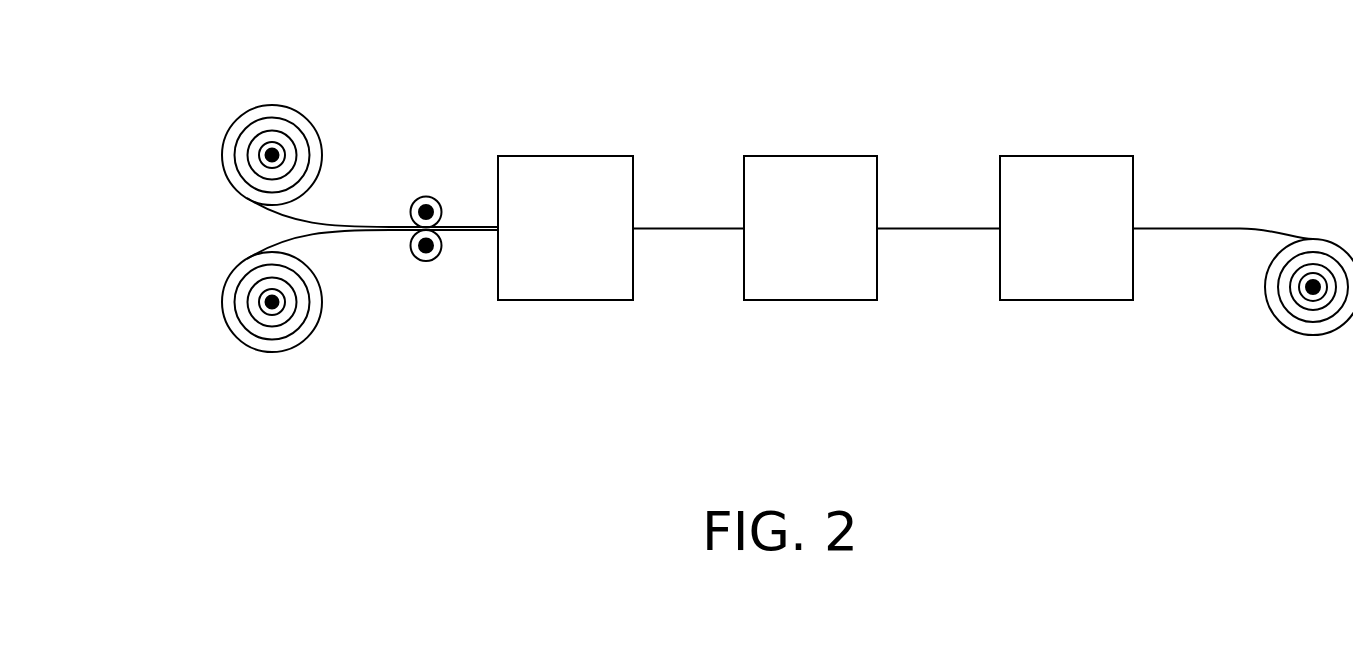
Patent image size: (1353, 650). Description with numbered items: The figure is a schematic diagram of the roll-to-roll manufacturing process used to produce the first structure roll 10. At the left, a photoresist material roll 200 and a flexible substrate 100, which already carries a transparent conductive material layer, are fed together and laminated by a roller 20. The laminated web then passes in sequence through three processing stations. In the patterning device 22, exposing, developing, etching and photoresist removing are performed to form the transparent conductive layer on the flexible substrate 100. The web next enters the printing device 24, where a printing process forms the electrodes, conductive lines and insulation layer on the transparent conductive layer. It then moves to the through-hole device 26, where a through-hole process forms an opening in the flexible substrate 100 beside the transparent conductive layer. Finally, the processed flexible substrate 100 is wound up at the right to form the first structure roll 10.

The photoresist material roll 200 is at (245, 120).
The flexible substrate 100 is at (248, 338).
The roller 20 is at (430, 196).
The patterning device 22 is at (556, 173).
The printing device 24 is at (823, 167).
The through-hole device 26 is at (1063, 168).
The first structure roll 10 is at (1313, 333).